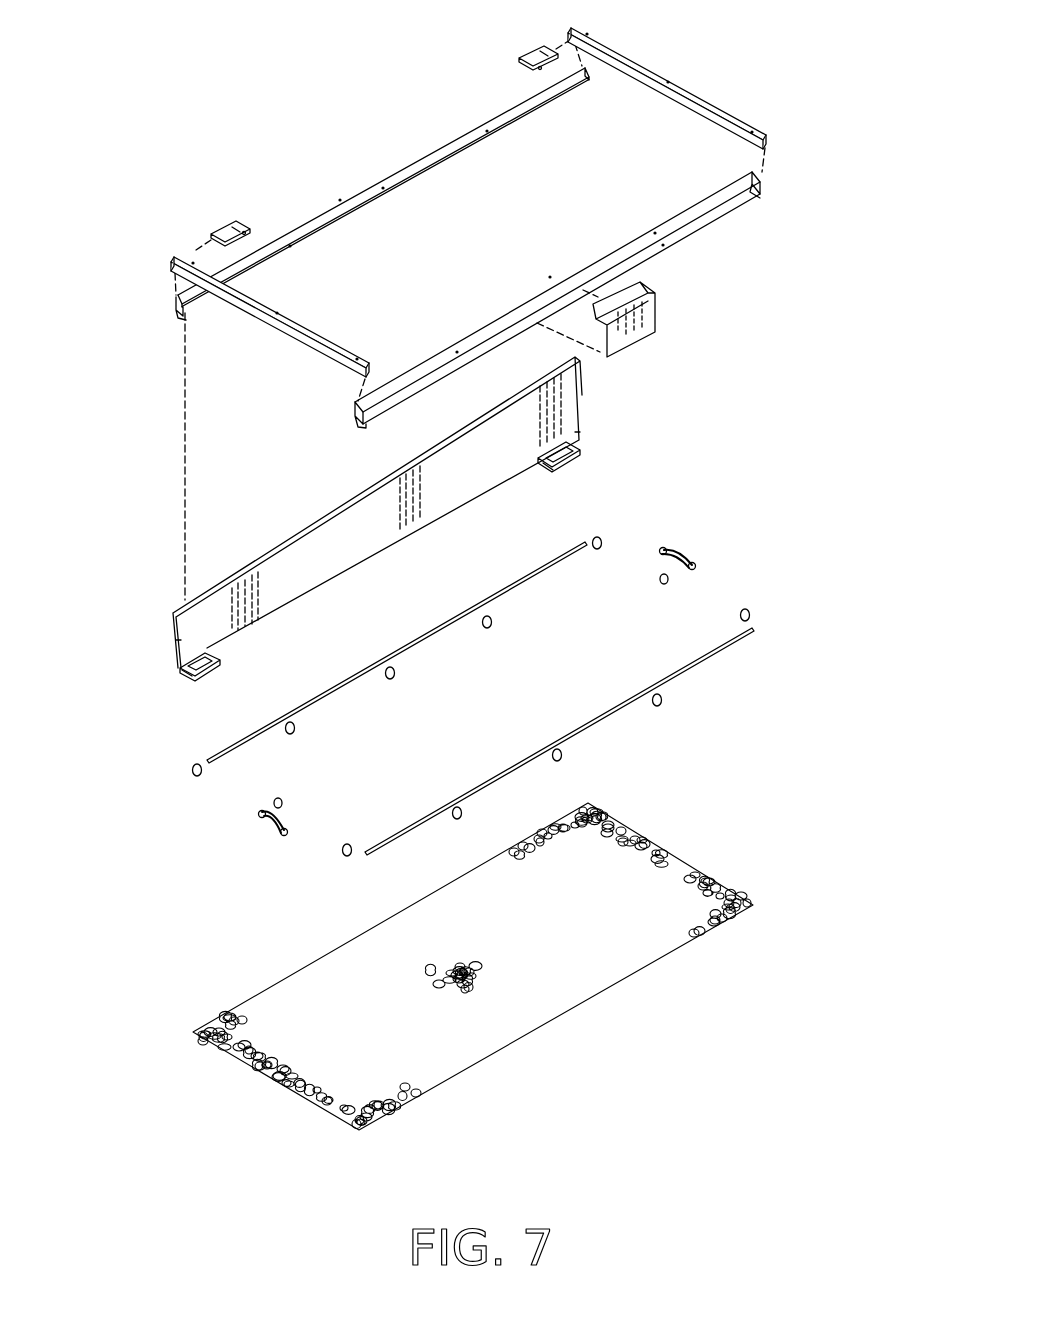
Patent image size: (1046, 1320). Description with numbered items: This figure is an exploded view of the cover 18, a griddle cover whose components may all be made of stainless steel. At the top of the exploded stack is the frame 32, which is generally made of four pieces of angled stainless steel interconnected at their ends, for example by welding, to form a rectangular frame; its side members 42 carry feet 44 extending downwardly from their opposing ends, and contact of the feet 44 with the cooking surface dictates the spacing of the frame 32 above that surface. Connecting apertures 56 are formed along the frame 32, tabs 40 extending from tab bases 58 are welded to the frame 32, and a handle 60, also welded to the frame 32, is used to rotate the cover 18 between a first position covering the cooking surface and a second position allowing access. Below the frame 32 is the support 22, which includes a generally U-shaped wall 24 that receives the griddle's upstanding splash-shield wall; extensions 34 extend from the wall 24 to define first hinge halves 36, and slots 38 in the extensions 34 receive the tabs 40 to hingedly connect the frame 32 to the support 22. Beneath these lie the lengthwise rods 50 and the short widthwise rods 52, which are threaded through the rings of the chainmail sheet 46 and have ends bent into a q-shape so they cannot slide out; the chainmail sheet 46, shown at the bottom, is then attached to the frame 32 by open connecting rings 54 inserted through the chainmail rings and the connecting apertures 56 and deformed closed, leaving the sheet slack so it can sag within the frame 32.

The cover 18 is at (162, 33).
The support 22 is at (604, 412).
The wall 24 is at (345, 525).
The frame 32 is at (800, 150).
The extensions 34 is at (218, 661).
The first hinge halves 36 is at (225, 650).
The slots 38 is at (178, 670).
The tabs 40 is at (216, 236).
The side members 42 is at (445, 150).
The feet 44 is at (565, 90).
The chainmail sheet 46 is at (692, 845).
The rods 50 is at (513, 594).
The widthwise rods 52 is at (258, 835).
The connecting rings 54 is at (202, 770).
The connecting apertures 56 is at (588, 33).
The tab bases 58 is at (246, 231).
The handle 60 is at (652, 300).